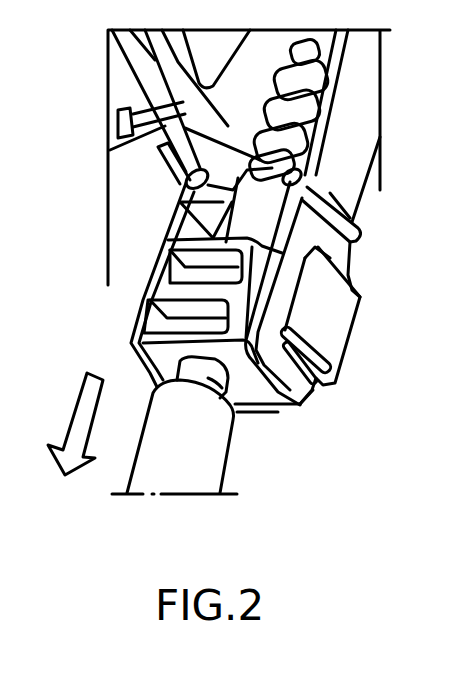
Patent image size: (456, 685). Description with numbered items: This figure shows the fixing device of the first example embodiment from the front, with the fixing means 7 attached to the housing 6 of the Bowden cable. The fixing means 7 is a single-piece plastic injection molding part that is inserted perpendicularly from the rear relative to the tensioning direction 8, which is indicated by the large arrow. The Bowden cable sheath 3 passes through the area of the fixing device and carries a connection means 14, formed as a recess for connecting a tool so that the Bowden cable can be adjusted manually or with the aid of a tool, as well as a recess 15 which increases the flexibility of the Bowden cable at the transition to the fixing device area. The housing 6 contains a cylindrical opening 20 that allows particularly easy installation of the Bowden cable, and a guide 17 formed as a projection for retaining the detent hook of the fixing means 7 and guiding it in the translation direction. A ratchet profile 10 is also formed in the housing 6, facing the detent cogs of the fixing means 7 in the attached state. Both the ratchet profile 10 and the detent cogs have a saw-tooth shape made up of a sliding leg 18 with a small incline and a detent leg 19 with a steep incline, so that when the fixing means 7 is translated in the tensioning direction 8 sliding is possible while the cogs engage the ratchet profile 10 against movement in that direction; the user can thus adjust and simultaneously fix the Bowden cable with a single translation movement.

The Bowden cable sheath 3 is at (190, 470).
The housing 6 is at (115, 192).
The fixing means 7 is at (330, 335).
The tensioning direction 8 is at (67, 458).
The ratchet profile 10 is at (313, 388).
The connection means 14 is at (165, 318).
The recess 15 is at (228, 398).
The guide 17 is at (360, 217).
The sliding leg 18 is at (350, 272).
The detent leg 19 is at (350, 280).
The cylindrical opening 20 is at (303, 174).